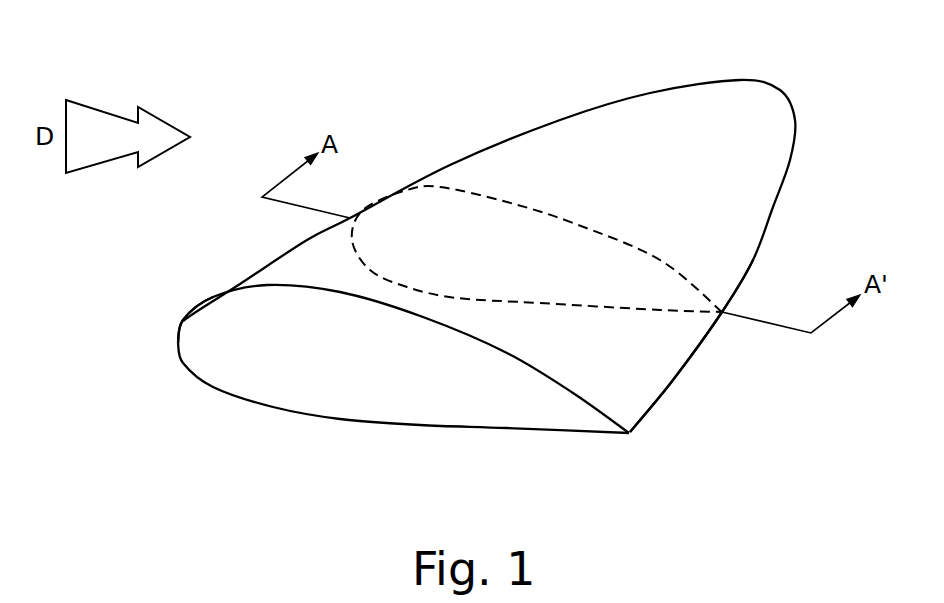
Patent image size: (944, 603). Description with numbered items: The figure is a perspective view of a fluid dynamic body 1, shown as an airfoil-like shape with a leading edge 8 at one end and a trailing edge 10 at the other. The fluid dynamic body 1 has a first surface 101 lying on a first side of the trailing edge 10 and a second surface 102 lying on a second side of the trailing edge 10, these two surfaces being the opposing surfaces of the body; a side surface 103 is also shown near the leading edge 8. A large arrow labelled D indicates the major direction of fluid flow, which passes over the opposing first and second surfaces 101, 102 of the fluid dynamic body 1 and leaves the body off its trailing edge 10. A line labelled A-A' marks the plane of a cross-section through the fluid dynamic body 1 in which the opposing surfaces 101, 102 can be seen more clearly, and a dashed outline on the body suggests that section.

The fluid dynamic body 1 is at (605, 155).
The first surface 101 is at (768, 160).
The second surface 102 is at (398, 390).
The side surface 103 is at (210, 343).
The leading edge 8 is at (183, 320).
The trailing edge 10 is at (673, 380).